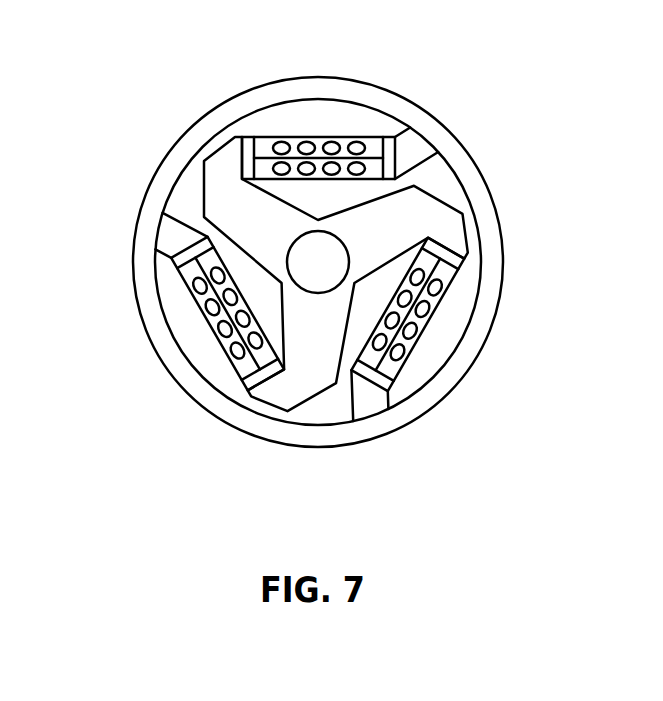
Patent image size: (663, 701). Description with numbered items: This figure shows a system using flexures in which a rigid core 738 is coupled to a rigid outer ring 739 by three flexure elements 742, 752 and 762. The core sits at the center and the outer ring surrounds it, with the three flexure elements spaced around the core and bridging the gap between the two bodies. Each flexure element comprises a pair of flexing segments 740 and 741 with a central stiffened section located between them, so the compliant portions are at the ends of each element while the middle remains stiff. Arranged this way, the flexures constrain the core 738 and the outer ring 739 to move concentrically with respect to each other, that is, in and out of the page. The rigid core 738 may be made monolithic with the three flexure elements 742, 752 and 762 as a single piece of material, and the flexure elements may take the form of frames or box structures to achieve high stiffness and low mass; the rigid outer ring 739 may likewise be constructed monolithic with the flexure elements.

The rigid core 738 is at (218, 173).
The rigid outer ring 739 is at (345, 438).
The flexing segment 740 is at (243, 388).
The flexing segment 741 is at (177, 262).
The flexure element 742 is at (215, 337).
The flexure element 752 is at (346, 137).
The flexure element 762 is at (428, 320).